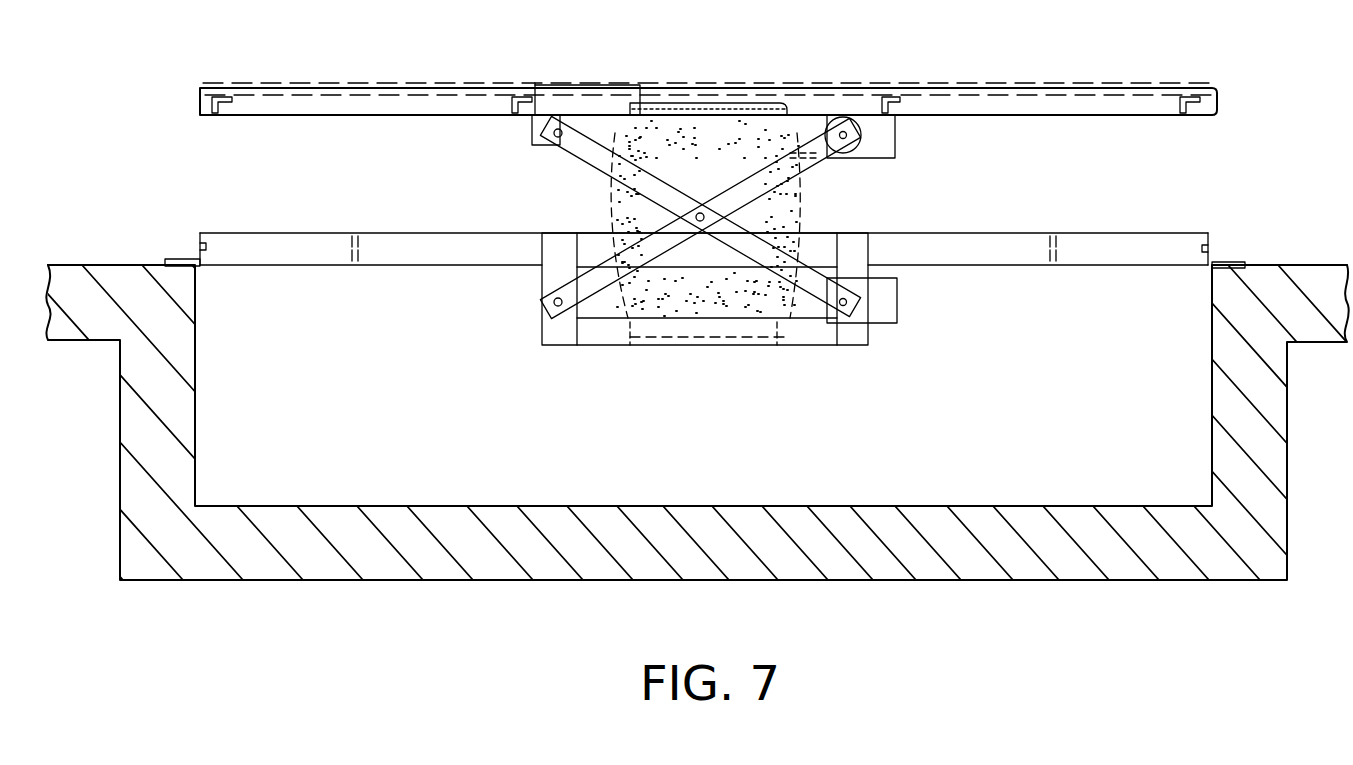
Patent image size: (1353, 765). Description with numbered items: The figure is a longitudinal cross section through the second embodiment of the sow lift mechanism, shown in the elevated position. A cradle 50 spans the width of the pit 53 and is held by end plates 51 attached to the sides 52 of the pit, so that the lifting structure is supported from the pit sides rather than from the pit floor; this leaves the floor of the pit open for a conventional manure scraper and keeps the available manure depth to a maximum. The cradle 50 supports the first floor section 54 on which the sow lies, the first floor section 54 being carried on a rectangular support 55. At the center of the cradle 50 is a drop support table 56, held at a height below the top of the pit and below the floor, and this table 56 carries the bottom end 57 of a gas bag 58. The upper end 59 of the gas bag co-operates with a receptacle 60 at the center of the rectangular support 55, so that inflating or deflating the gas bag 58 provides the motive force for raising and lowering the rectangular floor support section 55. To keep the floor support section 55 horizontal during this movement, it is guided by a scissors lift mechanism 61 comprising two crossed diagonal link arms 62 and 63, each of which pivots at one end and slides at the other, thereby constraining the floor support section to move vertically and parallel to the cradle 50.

The cradle 50 is at (483, 268).
The end plates 51 is at (178, 257).
The sides of the pit 52 is at (200, 325).
The pit 53 is at (690, 466).
The first floor section 54 is at (422, 80).
The rectangular support 55 is at (470, 113).
The drop support table 56 is at (612, 330).
The bottom end of the gas bag 57 is at (738, 308).
The gas bag 58 is at (800, 206).
The upper end of the gas bag 59 is at (652, 112).
The receptacle 60 is at (710, 100).
The scissors lift mechanism 61 is at (818, 178).
The diagonal link arm 62 is at (600, 163).
The diagonal link arm 63 is at (648, 244).